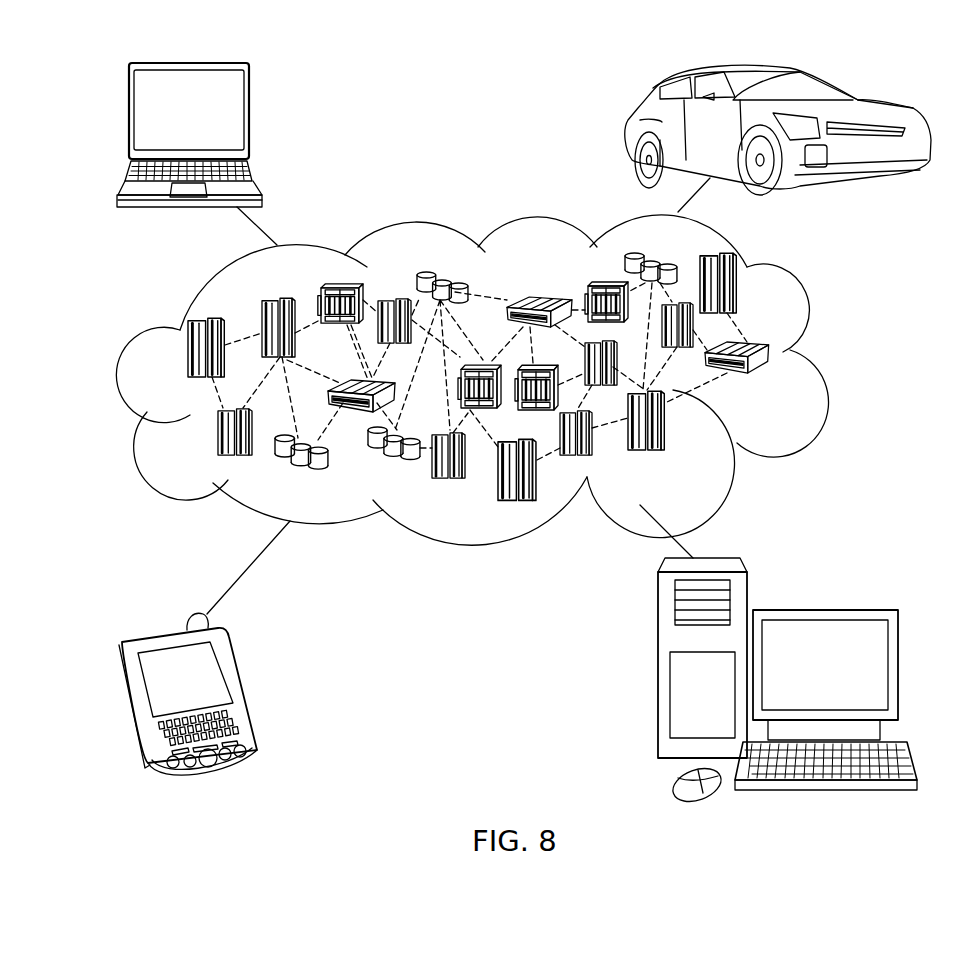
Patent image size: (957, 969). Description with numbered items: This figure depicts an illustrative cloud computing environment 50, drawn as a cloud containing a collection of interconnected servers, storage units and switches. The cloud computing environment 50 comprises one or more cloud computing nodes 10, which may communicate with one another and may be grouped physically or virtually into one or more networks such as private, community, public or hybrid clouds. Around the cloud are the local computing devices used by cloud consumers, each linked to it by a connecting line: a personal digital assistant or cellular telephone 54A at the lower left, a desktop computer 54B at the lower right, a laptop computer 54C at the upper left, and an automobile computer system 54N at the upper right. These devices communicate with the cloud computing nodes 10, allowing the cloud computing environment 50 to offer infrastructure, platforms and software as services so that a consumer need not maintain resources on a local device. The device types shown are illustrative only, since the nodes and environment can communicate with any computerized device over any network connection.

The cloud computing node 10 is at (778, 389).
The cloud computing environment 50 is at (824, 353).
The personal digital assistant or cellular telephone 54A is at (240, 689).
The desktop computer 54B is at (822, 610).
The laptop computer 54C is at (249, 118).
The automobile computer system 54N is at (632, 131).